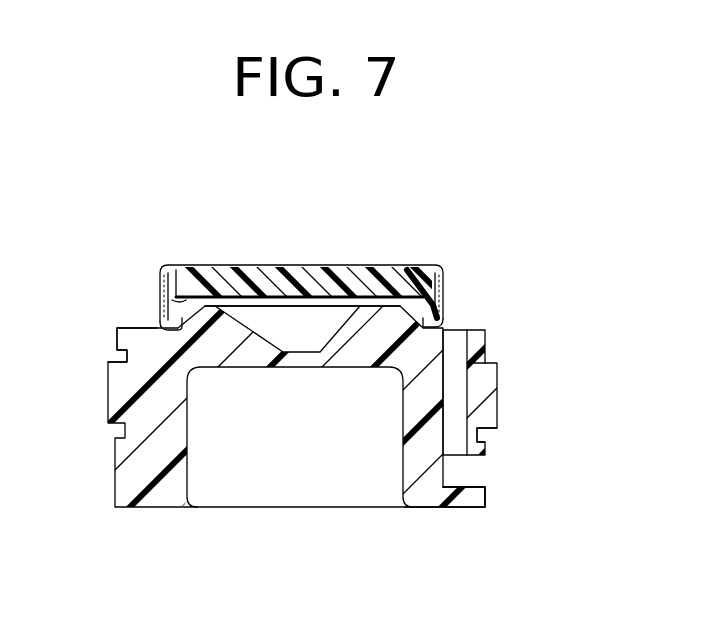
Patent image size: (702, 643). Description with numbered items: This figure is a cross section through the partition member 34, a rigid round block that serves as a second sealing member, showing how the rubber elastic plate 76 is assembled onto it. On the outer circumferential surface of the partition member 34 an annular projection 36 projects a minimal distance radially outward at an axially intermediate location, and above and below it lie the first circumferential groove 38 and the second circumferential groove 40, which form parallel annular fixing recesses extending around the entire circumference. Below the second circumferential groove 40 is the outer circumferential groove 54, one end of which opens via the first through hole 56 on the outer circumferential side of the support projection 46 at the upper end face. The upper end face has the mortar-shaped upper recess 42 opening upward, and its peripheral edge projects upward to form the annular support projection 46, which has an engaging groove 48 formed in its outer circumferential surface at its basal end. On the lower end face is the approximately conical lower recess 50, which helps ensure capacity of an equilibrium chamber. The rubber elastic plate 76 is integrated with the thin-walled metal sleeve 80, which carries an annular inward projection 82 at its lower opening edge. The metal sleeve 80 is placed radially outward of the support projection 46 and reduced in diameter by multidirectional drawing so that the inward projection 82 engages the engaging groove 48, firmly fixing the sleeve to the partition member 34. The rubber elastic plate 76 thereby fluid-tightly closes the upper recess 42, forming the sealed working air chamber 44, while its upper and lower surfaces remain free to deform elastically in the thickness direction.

The partition member 34 is at (520, 390).
The annular projection 36 is at (485, 409).
The first circumferential groove 38 is at (478, 357).
The second circumferential groove 40 is at (487, 436).
The upper recess 42 is at (337, 350).
The working air chamber 44 is at (316, 318).
The support projection 46 is at (183, 300).
The body 48 is at (437, 338).
The lower recess 50 is at (406, 468).
The outer circumferential groove 54 is at (470, 487).
The first through hole 56 is at (458, 352).
The rubber elastic plate 76 is at (266, 275).
The metal sleeve 80 is at (160, 292).
The inward projection 82 is at (156, 334).